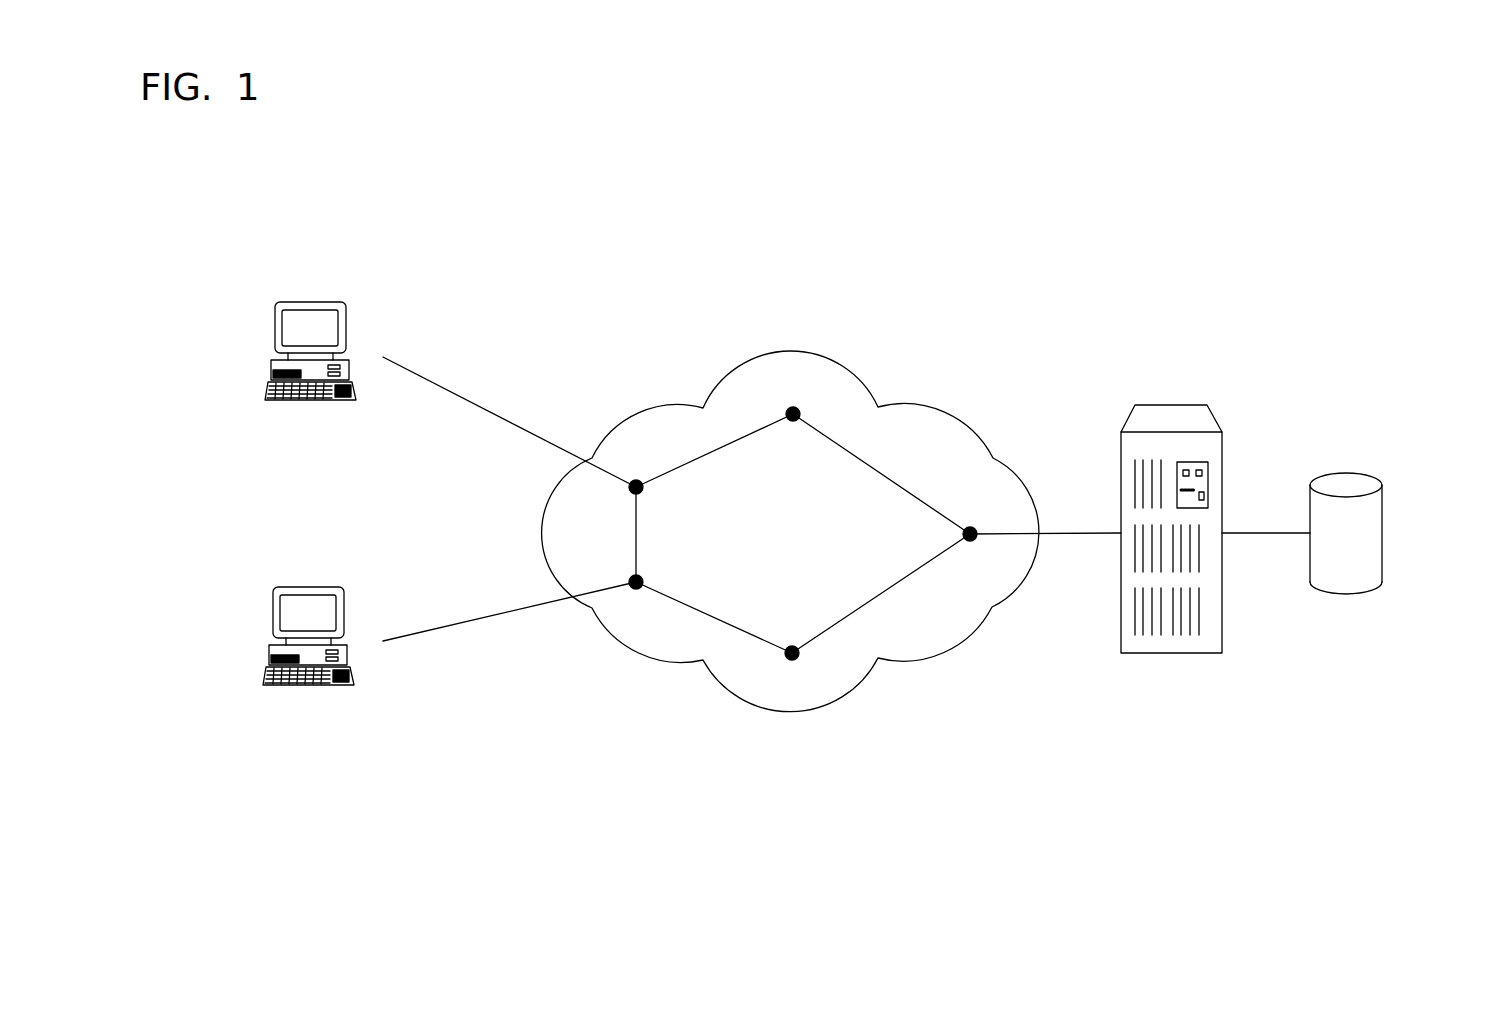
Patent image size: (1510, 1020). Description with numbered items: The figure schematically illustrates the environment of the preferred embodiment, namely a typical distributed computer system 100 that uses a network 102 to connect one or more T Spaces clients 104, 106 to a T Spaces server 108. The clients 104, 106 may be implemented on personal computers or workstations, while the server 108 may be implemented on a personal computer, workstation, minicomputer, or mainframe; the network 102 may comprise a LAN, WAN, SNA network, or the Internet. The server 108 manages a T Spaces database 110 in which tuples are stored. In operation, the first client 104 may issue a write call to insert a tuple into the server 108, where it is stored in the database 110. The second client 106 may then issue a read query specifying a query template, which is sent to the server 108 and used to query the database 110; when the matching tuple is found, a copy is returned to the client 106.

The distributed computer system 100 is at (878, 323).
The network 102 is at (951, 408).
The T Spaces client 104 is at (365, 315).
The T Spaces client 106 is at (372, 583).
The T Spaces server 108 is at (1220, 407).
The T Spaces database 110 is at (1390, 518).